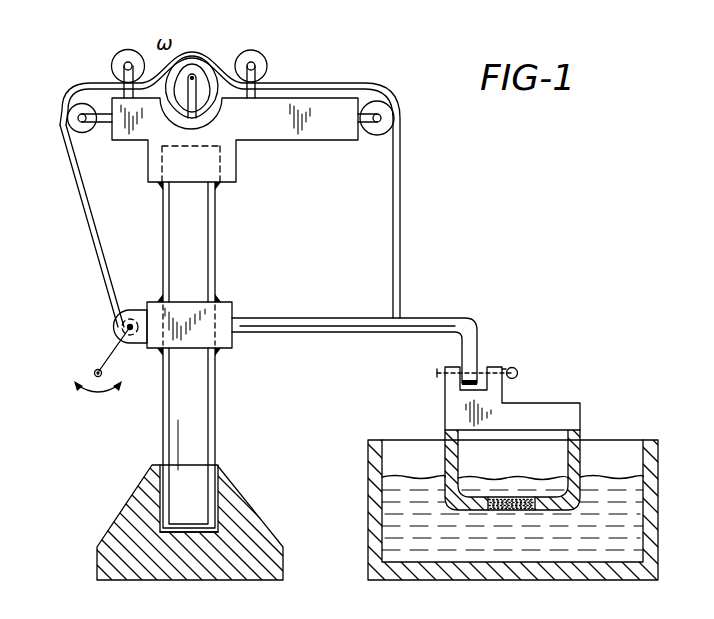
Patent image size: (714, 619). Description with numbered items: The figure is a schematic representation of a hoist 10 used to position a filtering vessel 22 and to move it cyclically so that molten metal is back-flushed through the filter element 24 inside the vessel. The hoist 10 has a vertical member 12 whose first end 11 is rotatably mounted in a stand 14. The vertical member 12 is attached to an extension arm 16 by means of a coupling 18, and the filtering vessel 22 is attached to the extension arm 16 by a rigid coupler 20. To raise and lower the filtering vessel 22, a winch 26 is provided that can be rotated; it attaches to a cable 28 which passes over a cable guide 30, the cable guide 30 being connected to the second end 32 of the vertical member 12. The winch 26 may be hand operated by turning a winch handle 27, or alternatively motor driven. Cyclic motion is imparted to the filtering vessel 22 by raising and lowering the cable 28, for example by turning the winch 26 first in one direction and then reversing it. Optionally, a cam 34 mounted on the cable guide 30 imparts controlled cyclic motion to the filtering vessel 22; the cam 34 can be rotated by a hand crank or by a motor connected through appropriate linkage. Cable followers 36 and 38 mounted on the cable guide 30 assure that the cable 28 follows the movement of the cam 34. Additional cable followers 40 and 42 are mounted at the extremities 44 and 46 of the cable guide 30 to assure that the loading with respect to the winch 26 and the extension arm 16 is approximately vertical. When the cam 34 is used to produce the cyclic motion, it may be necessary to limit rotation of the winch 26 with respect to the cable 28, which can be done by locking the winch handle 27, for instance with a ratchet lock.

The hoist 10 is at (134, 422).
The first end 11 is at (160, 496).
The vertical member 12 is at (216, 392).
The stand 14 is at (252, 582).
The extension arm 16 is at (318, 318).
The coupling 18 is at (226, 302).
The rigid coupler 20 is at (497, 367).
The filtering vessel 22 is at (582, 432).
The filter element 24 is at (517, 512).
The winch 26 is at (113, 325).
The winch handle 27 is at (97, 369).
The cable 28 is at (80, 197).
The cable guide 30 is at (328, 79).
The second end 32 is at (237, 177).
The cam 34 is at (205, 60).
The cable follower 36 is at (128, 49).
The cable follower 38 is at (277, 30).
The cable follower 40 is at (69, 103).
The cable follower 42 is at (391, 101).
The extremity 44 is at (111, 140).
The extremity 46 is at (357, 140).